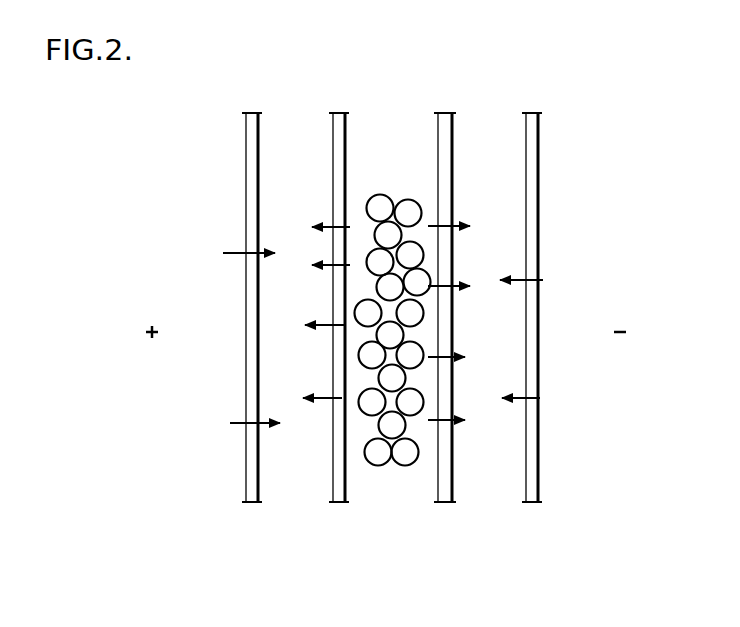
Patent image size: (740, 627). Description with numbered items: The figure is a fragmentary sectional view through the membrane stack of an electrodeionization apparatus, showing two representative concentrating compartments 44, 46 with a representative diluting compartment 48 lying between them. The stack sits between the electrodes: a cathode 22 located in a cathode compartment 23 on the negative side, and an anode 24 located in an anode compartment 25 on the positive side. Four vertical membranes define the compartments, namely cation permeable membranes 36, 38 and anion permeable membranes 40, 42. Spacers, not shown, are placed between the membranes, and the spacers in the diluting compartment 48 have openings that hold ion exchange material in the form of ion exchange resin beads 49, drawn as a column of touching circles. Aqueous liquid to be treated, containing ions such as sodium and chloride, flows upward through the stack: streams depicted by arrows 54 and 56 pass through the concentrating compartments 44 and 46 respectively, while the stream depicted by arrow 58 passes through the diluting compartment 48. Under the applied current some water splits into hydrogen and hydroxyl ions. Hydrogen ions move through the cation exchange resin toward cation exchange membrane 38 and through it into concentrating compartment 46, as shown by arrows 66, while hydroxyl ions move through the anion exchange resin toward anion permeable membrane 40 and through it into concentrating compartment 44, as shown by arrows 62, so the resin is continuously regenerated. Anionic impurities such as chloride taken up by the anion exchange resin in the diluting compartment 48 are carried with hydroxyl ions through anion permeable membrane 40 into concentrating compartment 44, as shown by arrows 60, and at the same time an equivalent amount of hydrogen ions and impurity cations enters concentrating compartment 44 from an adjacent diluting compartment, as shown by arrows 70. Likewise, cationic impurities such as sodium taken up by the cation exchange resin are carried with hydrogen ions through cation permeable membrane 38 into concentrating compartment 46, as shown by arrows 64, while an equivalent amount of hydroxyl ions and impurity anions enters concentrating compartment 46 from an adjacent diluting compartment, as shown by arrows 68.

The cathode 22 is at (625, 345).
The cathode compartment 23 is at (672, 273).
The anode 24 is at (150, 365).
The anode compartment 25 is at (152, 247).
The cation permeable membrane 36 is at (249, 113).
The cation permeable membrane 38 is at (441, 113).
The anion permeable membrane 40 is at (337, 113).
The anion permeable membrane 42 is at (529, 113).
The concentrating compartment 44 is at (316, 150).
The concentrating compartment 46 is at (508, 150).
The diluting compartment 48 is at (411, 150).
The ion exchange resin beads 49 is at (410, 213).
The arrow depicting stream of liquid 54 is at (298, 480).
The arrow depicting stream of liquid 56 is at (495, 480).
The arrow depicting stream of liquid 58 is at (400, 478).
The arrows depicting anionic impurity transport 60 is at (317, 380).
The arrows depicting hydroxyl ion transport 62 is at (321, 261).
The arrows depicting cationic impurity transport 64 is at (459, 403).
The arrows depicting hydrogen ion transport 66 is at (459, 274).
The arrows depicting hydroxyl ion and impurity anion transport 68 is at (542, 350).
The arrows depicting hydrogen ion and impurity cation transport 70 is at (242, 322).